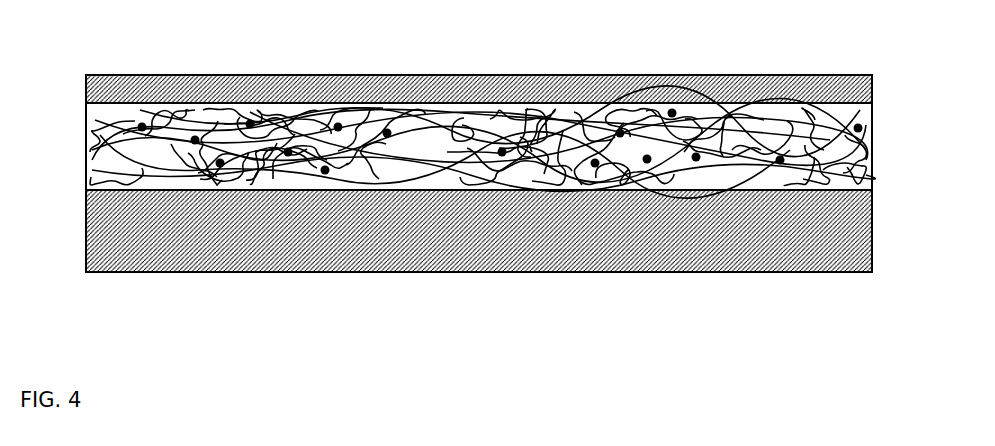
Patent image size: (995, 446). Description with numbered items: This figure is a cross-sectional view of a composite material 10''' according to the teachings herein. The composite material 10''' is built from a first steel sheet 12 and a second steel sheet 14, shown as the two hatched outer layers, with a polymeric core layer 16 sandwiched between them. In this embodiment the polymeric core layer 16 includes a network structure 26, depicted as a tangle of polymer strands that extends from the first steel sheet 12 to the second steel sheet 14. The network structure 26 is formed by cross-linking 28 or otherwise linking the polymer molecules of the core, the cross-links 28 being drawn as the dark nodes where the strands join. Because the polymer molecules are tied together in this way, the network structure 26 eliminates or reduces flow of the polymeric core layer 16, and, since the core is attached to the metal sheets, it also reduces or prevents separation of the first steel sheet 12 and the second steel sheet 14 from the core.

The composite material 10''' is at (479, 146).
The first steel sheet 12 is at (395, 240).
The second steel sheet 14 is at (358, 93).
The polymeric core layer 16 is at (482, 171).
The network structure 26 is at (563, 172).
The cross-link 28 is at (667, 170).